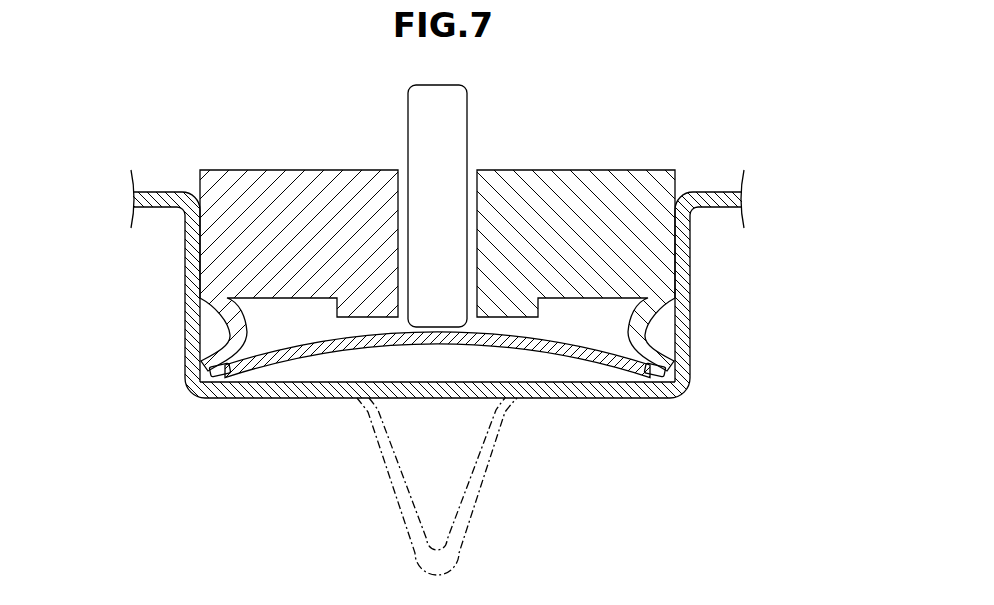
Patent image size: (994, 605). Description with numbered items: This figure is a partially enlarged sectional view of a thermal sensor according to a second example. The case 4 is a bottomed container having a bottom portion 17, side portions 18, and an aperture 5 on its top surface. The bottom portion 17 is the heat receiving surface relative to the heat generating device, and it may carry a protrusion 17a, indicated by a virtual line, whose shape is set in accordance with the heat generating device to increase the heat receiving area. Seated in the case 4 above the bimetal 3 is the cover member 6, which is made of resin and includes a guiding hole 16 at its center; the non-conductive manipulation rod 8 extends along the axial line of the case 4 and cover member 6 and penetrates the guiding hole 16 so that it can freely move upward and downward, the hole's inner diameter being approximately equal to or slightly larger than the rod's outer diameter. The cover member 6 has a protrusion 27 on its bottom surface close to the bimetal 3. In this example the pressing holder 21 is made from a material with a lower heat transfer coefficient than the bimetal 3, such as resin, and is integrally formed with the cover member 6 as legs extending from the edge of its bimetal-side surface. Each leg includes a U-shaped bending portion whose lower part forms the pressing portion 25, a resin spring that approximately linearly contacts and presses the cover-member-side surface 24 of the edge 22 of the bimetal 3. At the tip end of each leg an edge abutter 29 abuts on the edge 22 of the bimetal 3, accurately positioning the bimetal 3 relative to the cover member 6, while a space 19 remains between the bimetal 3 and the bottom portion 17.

The bimetal 3 is at (542, 360).
The case 4 is at (760, 343).
The aperture 5 is at (680, 193).
The cover member 6 is at (633, 213).
The manipulation rod 8 is at (458, 90).
The guiding hole 16 is at (470, 176).
The bottom portion 17 is at (642, 398).
The protrusion 17a is at (465, 530).
The side portions 18 is at (692, 355).
The space 19 is at (587, 378).
The pressing holder 21 is at (213, 331).
The edge 22 is at (217, 382).
The cover-member-side surface 24 is at (310, 336).
The pressing portion 25 is at (225, 368).
The protrusion 27 is at (388, 299).
The edge abutter 29 is at (193, 387).